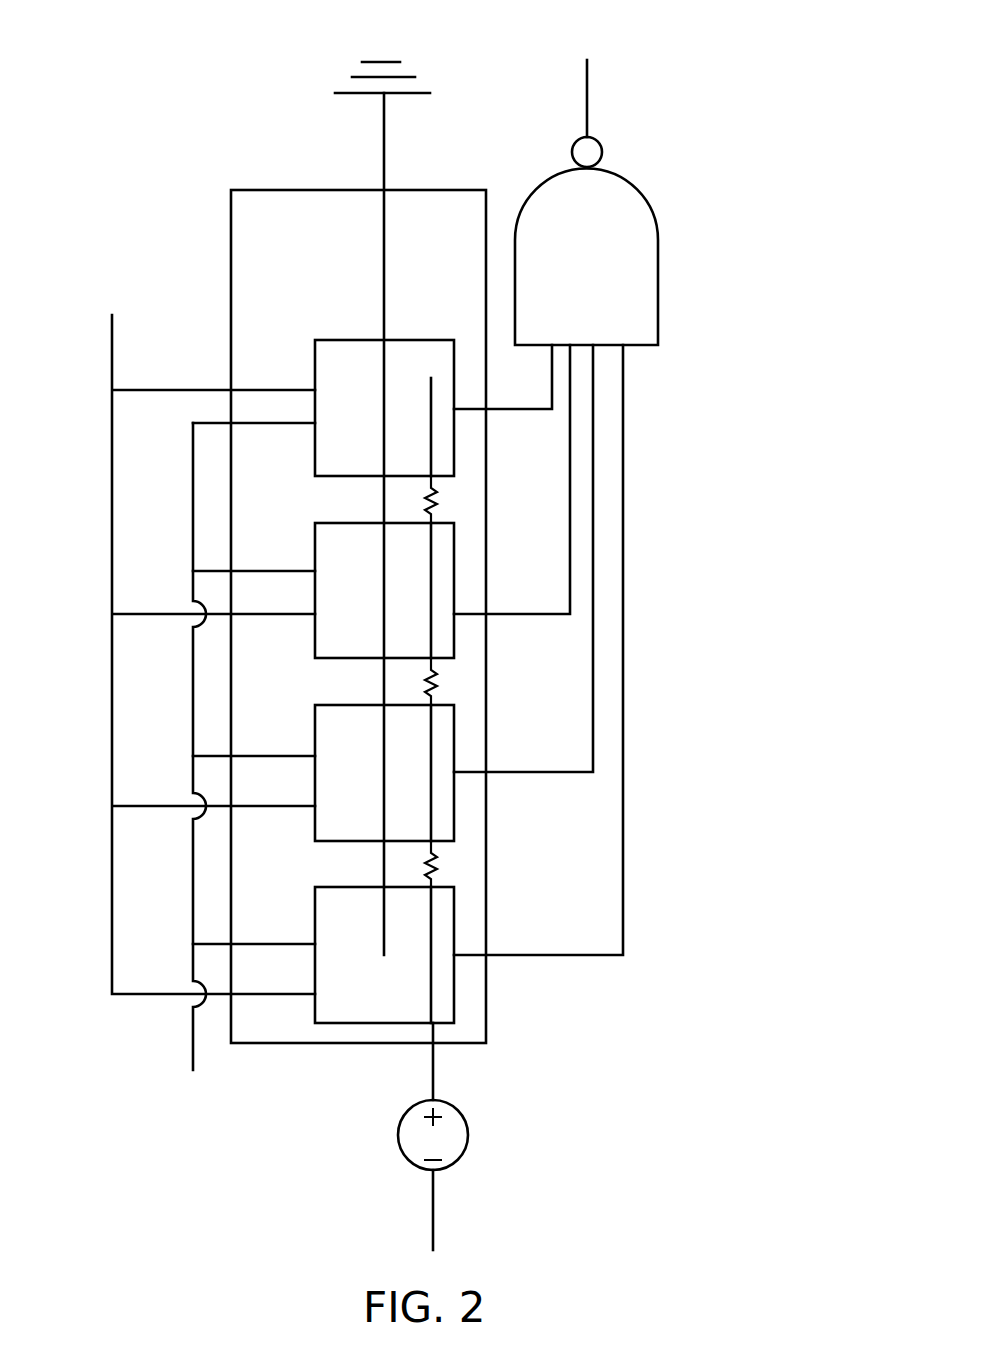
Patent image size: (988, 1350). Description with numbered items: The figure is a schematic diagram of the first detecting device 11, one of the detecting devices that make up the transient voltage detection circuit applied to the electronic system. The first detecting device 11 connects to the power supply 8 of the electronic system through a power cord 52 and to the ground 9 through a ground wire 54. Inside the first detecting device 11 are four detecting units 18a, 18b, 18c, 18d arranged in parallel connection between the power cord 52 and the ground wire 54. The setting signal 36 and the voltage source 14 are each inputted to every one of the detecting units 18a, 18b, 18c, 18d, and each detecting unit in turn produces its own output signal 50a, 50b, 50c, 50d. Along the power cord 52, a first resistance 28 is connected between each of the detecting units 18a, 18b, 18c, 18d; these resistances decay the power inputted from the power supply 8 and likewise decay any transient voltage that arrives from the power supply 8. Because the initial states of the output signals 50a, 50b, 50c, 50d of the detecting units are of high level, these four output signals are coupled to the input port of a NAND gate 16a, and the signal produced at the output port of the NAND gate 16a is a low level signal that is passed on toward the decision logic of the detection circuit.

The ground 9 is at (360, 62).
The ground wire 54 is at (384, 138).
The first detecting device 11 is at (231, 256).
The setting signal 36 is at (188, 654).
The voltage source 14 is at (254, 754).
The detecting unit 18a is at (315, 909).
The detecting unit 18b is at (315, 727).
The detecting unit 18c is at (315, 545).
The detecting unit 18d is at (315, 362).
The first resistance 28 is at (436, 866).
The output signal 50a is at (577, 955).
The output signal 50b is at (567, 772).
The output signal 50c is at (545, 614).
The output signal 50d is at (525, 409).
The NAND gate 16a is at (658, 345).
The power cord 52 is at (433, 1062).
The power supply 8 is at (465, 1148).